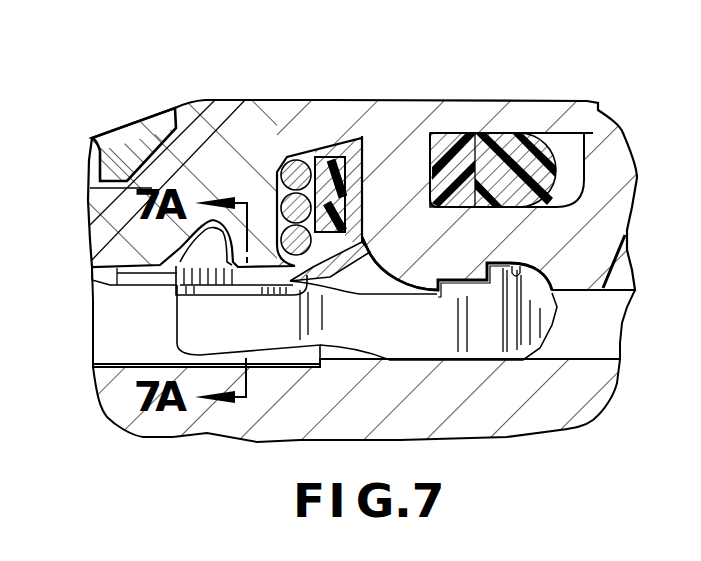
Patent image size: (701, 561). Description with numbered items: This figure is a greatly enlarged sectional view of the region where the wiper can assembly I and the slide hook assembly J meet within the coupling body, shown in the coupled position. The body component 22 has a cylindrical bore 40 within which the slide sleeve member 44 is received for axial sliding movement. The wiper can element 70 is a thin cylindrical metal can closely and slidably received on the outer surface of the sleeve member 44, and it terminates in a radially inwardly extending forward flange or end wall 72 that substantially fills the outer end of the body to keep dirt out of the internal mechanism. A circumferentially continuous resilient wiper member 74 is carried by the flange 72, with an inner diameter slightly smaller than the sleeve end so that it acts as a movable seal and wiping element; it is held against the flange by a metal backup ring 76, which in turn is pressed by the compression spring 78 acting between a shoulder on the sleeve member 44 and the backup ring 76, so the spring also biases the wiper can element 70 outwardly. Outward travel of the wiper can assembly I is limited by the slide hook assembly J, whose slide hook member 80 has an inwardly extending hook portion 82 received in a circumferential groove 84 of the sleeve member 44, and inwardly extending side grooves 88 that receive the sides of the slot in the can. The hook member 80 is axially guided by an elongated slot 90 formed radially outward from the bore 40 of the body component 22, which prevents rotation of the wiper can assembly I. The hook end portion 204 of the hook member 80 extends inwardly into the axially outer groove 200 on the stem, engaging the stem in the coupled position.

The body component 22 is at (290, 423).
The cylindrical bore 40 is at (630, 262).
The slide sleeve member 44 is at (384, 118).
The wiper can element 70 is at (133, 280).
The forward flange or end wall 72 is at (366, 191).
The resilient wiper member 74 is at (340, 156).
The metal backup ring 76 is at (333, 152).
The compression spring 78 is at (290, 160).
The slide hook member 80 is at (490, 347).
The hook portion 82 is at (195, 250).
The circumferential groove 84 is at (214, 266).
The side grooves 88 is at (240, 268).
The elongated slots 90 is at (595, 332).
The axially outer groove 200 is at (520, 264).
The hook end portion 204 is at (492, 278).
The wiper can assembly I is at (456, 133).
The slide hook assembly J is at (453, 410).